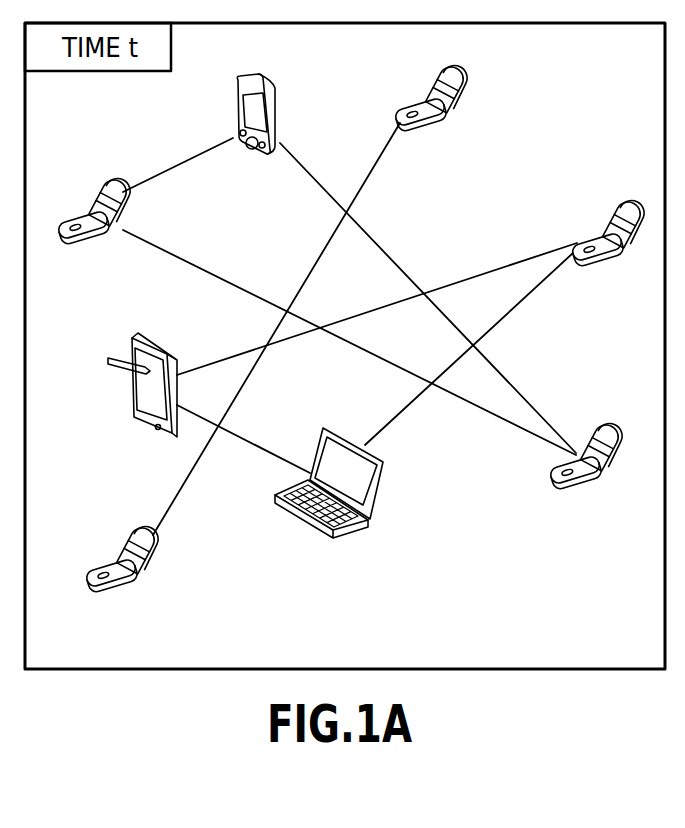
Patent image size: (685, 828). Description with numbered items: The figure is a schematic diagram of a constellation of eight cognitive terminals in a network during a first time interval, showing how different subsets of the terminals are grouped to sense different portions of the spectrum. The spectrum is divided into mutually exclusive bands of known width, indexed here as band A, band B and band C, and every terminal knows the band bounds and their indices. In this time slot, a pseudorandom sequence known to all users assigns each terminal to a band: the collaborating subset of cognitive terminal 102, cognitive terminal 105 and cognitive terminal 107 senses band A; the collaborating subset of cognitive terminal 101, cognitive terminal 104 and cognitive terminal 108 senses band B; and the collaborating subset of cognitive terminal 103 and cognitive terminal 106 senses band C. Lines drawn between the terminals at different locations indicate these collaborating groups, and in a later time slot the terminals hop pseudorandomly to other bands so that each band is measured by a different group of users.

The cognitive terminal 101 is at (63, 245).
The cognitive terminal 102 is at (130, 408).
The cognitive terminal 103 is at (123, 585).
The cognitive terminal 104 is at (250, 158).
The cognitive terminal 105 is at (297, 520).
The cognitive terminal 106 is at (430, 123).
The cognitive terminal 107 is at (588, 263).
The cognitive terminal 108 is at (585, 482).